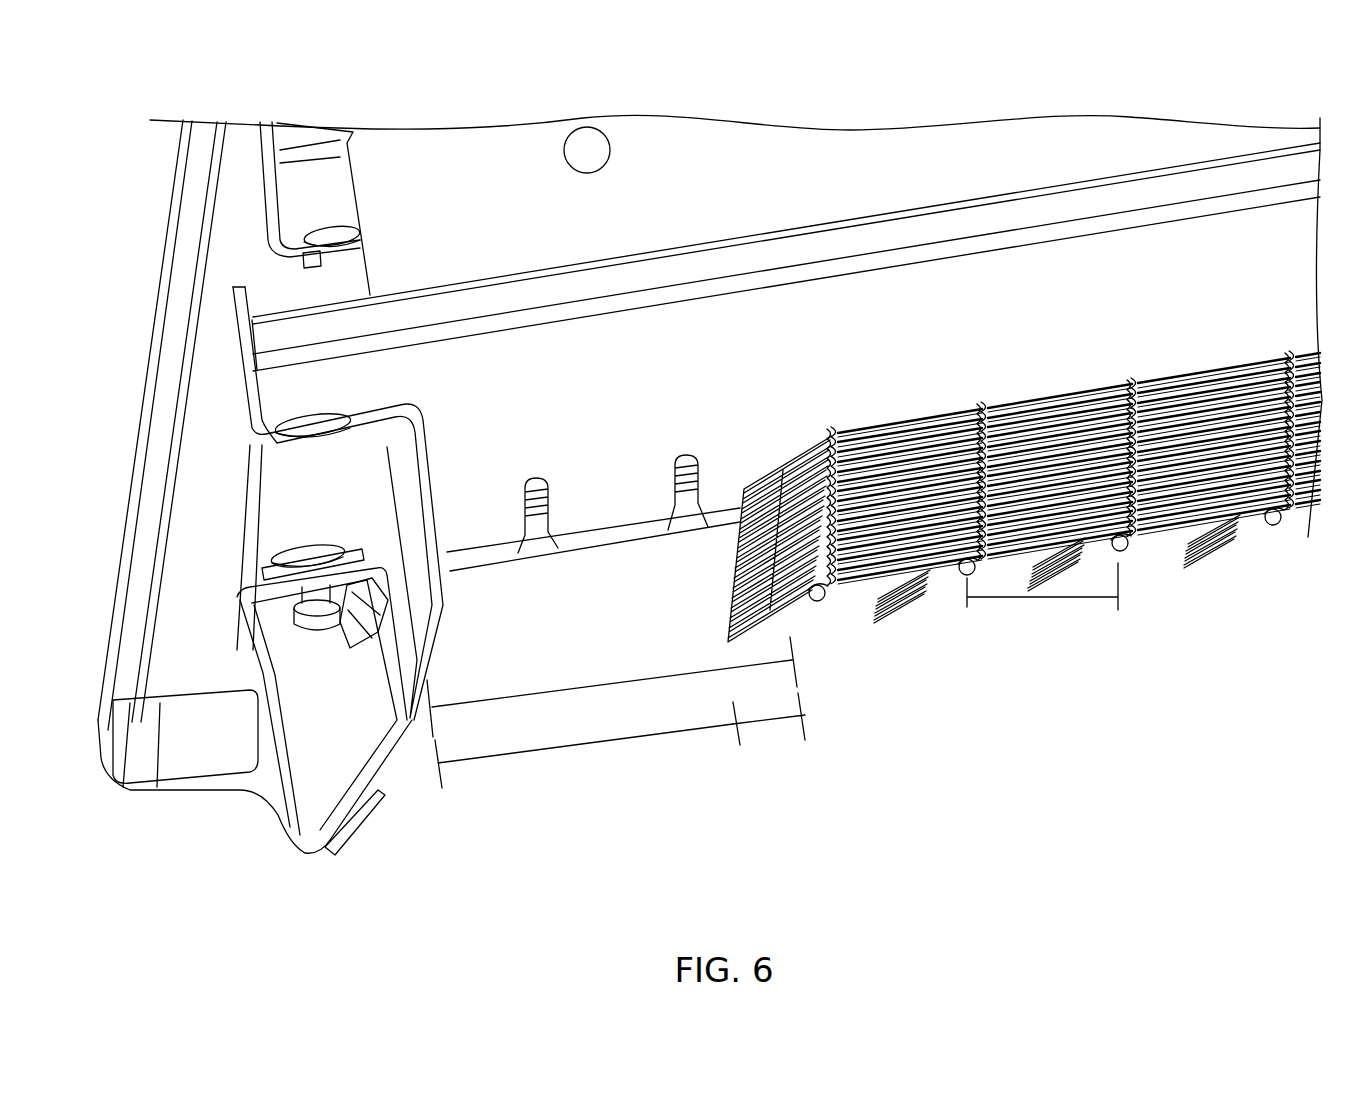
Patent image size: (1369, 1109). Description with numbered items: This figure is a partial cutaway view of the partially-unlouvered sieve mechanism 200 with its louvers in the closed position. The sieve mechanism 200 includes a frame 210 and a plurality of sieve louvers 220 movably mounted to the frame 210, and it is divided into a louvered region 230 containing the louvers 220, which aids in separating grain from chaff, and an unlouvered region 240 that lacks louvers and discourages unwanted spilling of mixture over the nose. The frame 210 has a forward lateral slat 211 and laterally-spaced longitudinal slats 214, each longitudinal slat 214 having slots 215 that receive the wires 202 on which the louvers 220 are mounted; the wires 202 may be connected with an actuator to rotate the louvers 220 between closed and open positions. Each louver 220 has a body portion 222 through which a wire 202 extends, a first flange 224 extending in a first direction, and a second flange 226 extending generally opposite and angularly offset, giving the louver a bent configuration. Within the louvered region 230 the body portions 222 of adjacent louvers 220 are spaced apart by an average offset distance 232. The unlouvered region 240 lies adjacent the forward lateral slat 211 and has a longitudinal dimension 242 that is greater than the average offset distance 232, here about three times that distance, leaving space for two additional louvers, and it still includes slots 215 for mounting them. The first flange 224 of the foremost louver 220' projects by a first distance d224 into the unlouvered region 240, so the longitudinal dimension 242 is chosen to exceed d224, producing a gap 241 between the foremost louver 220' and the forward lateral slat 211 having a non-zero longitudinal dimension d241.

The partially-unlouvered sieve mechanism 200 is at (106, 127).
The frame 210 is at (145, 207).
The forward lateral slat 211 is at (160, 406).
The longitudinal slat 214 is at (664, 294).
The slot 215 is at (542, 560).
The sieve louver 220 is at (1024, 467).
The foremost louver 220' is at (916, 447).
The body portion 222 is at (837, 432).
The first flange 224 is at (763, 480).
The second flange 226 is at (906, 420).
The louvered region 230 is at (1024, 412).
The wire 202 is at (814, 606).
The average offset distance 232 is at (1042, 593).
The unlouvered region 240 is at (599, 385).
The gap 241 is at (471, 417).
The longitudinal dimension of the unlouvered region 242 is at (612, 687).
The longitudinal dimension of the gap d241 is at (587, 745).
The first distance of the first flange d224 is at (769, 725).